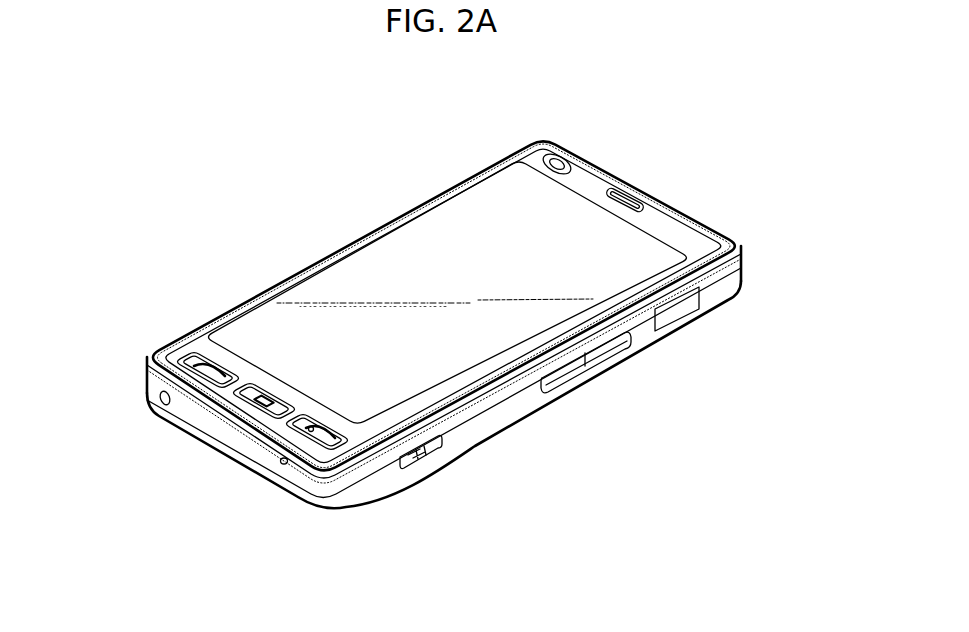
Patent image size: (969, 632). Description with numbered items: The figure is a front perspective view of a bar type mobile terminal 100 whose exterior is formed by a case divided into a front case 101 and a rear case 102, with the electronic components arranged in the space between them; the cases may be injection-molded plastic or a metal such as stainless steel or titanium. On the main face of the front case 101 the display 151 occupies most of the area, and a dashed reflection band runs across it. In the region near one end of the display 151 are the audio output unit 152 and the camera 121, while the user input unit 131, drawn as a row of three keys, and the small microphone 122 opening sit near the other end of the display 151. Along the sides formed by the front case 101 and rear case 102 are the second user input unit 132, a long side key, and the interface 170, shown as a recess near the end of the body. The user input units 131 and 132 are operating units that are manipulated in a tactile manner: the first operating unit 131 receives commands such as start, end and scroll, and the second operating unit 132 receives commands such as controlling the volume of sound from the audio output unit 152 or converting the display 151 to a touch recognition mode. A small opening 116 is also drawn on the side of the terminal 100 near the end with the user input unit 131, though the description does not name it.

The mobile terminal 100 is at (366, 164).
The front case 101 is at (312, 476).
The rear case 102 is at (360, 496).
The broadcast receiving antenna 116 is at (163, 406).
The camera 121 is at (565, 159).
The microphone 122 is at (284, 466).
The user input unit 131 is at (190, 360).
The user input unit 132 is at (567, 378).
The display 151 is at (360, 263).
The audio output unit 152 is at (633, 197).
The interface 170 is at (679, 307).